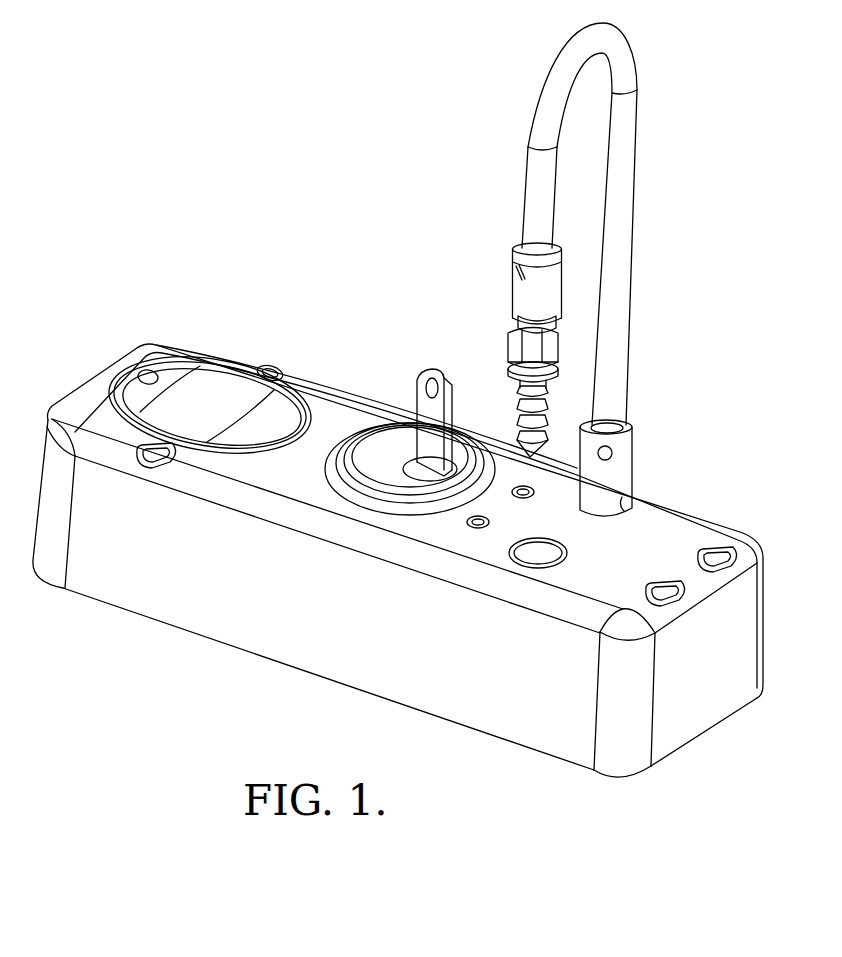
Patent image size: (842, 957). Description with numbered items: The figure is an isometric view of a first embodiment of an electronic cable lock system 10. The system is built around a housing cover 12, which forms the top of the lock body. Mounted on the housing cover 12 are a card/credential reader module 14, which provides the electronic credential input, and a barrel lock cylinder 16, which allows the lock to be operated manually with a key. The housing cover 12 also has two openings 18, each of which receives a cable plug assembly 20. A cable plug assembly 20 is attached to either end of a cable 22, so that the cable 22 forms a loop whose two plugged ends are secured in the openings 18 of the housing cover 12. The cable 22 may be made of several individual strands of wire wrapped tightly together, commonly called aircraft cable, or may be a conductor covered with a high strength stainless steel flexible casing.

The electronic cable lock system 10 is at (337, 212).
The housing cover 12 is at (316, 406).
The card/credential reader module 14 is at (212, 386).
The barrel lock cylinder 16 is at (378, 453).
The opening 18 is at (520, 551).
The cable plug assembly 20 is at (512, 305).
The cable 22 is at (627, 202).